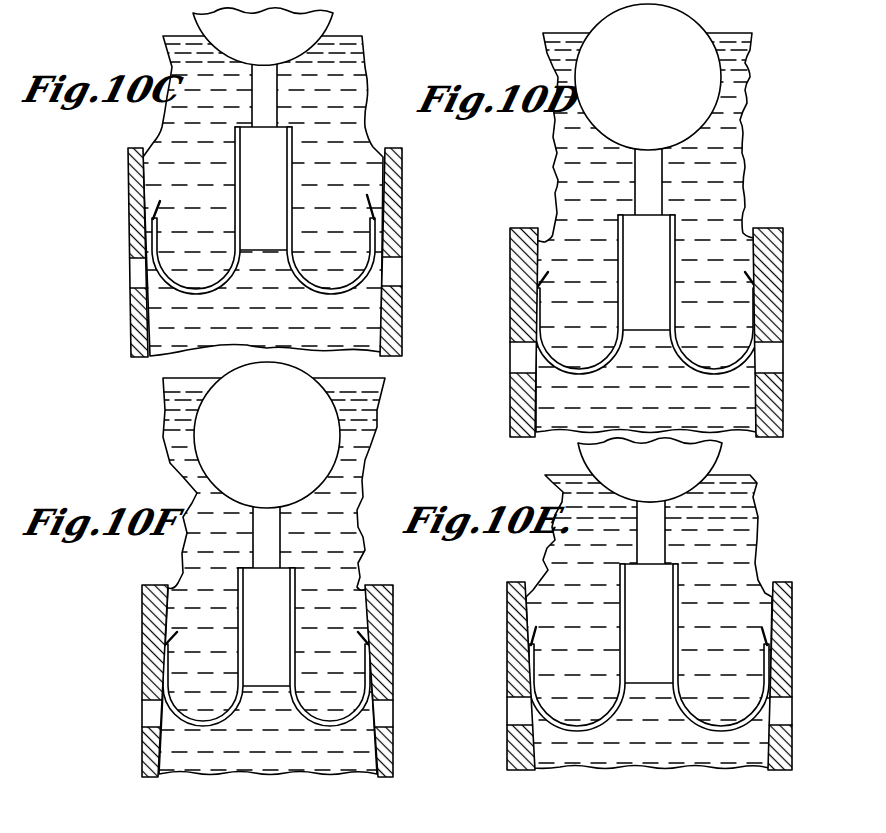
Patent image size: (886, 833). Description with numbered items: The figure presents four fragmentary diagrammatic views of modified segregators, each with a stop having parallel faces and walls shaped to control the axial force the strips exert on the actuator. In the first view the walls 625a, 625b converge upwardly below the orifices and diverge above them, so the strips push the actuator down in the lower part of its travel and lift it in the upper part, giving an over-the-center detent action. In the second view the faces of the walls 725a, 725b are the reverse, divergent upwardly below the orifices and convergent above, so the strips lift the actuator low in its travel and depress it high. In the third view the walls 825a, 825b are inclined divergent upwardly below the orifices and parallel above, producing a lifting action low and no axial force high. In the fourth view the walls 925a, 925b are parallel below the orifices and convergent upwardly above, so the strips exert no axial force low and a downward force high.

In FIG. 10C, the first side wall 625a is at (137, 222).
In FIG. 10C, the second side wall 625b is at (397, 204).
In FIG. 10D, the wall 725a is at (517, 285).
In FIG. 10D, the wall 725b is at (773, 227).
In FIG. 10E, the wall 825a is at (510, 580).
In FIG. 10E, the wall 825b is at (783, 578).
In FIG. 10F, the wall 925a is at (148, 615).
In FIG. 10F, the wall 925b is at (390, 652).